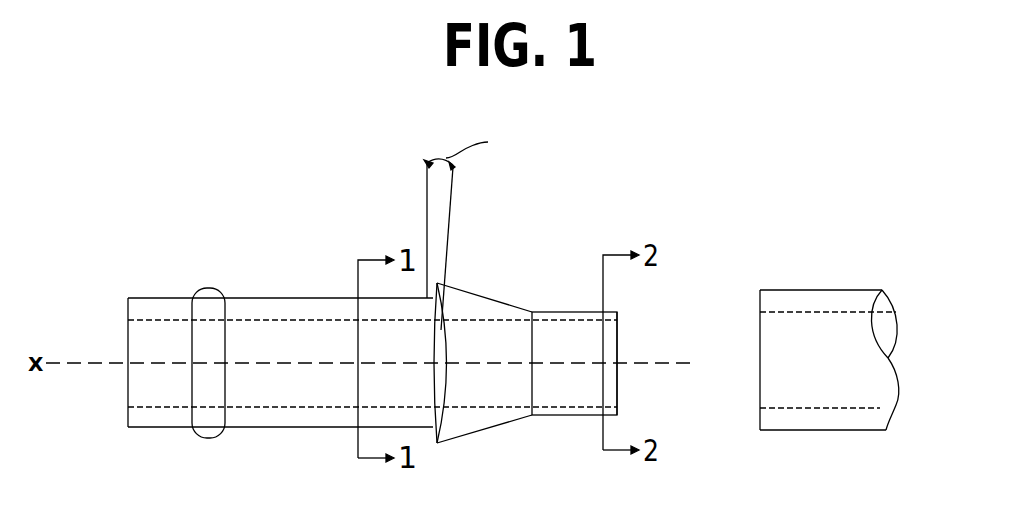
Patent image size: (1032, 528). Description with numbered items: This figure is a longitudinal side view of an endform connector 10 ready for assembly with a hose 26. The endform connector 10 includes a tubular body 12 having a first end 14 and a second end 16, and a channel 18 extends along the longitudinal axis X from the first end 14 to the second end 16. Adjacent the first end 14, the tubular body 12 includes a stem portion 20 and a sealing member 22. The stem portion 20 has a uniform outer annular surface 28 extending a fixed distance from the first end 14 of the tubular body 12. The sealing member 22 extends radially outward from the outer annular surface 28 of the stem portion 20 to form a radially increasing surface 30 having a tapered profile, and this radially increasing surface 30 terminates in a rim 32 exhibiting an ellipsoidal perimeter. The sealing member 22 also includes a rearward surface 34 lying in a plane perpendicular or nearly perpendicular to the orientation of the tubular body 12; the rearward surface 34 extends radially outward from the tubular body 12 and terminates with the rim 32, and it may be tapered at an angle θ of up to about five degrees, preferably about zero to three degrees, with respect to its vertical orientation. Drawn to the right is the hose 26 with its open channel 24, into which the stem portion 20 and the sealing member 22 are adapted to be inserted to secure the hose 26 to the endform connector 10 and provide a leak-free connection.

The endform connector 10 is at (134, 258).
The tubular body 12 is at (310, 298).
The first end 14 is at (617, 345).
The second end 16 is at (128, 343).
The channel 18 is at (255, 335).
The stem portion 20 is at (540, 311).
The sealing member 22 is at (482, 296).
The open channel 24 is at (760, 375).
The hose 26 is at (822, 290).
The outer annular surface 28 is at (585, 357).
The radially increasing surface 30 is at (502, 356).
The rim 32 is at (437, 445).
The rearward surface 34 is at (455, 285).